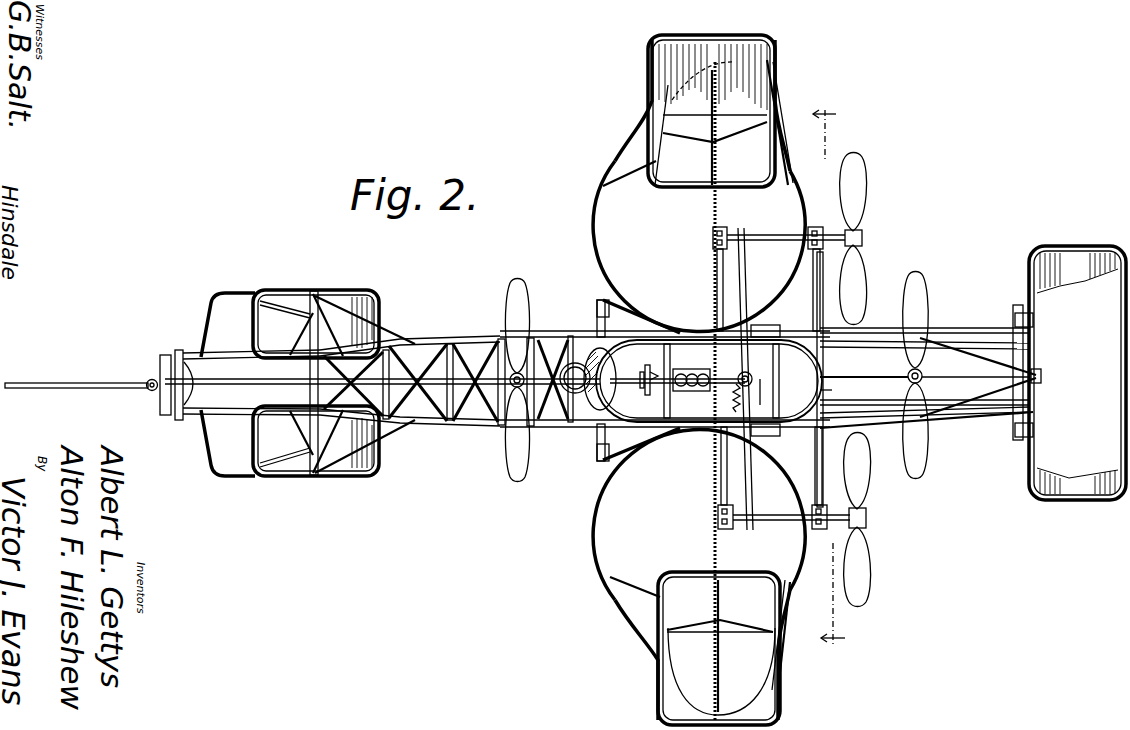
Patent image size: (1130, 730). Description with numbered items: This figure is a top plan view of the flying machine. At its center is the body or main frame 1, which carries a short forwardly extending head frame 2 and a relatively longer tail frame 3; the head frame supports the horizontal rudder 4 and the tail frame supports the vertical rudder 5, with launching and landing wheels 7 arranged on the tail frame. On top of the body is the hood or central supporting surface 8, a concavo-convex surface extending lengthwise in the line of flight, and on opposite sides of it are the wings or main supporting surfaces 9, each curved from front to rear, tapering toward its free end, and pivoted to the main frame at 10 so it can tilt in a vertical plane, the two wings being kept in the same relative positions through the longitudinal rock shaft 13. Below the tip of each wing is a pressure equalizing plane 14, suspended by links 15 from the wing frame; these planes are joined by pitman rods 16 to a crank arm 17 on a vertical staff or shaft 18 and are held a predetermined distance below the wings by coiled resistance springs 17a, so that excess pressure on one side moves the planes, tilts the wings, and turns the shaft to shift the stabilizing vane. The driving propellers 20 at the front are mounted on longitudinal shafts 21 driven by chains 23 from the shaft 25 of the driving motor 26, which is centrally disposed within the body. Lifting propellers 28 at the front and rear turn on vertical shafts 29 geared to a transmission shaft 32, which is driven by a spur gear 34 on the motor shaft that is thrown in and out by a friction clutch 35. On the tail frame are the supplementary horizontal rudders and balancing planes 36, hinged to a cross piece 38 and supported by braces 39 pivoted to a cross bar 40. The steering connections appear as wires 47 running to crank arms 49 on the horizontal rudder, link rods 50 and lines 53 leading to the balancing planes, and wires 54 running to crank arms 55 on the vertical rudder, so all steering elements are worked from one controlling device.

The body or main frame 1 is at (584, 323).
The head frame 2 is at (925, 379).
The tail frame 3 is at (248, 384).
The horizontal rudder 4 is at (1073, 476).
The vertical rudder 5 is at (75, 384).
The launching and landing wheels 7 is at (410, 368).
The hood or central supporting surface 8 is at (823, 391).
The wings or main supporting surfaces 9 is at (622, 301).
The wing pivot 10 is at (768, 325).
The rock shaft 13 is at (374, 477).
The pressure equalizing plane 14 is at (748, 93).
The links or flexible connections 15 is at (633, 173).
The pitman rods 16 is at (719, 200).
The crank arm 17 is at (732, 399).
The coiled resistance springs 17a is at (732, 403).
The vertical staff or shaft 18 is at (749, 373).
The driving propellers 20 is at (882, 568).
The longitudinal shafts 21 is at (835, 226).
The chains 23 is at (746, 283).
The motor shaft 25 is at (652, 388).
The driving motor 26 is at (697, 391).
The lifting propellers 28 is at (527, 308).
The vertical shafts 29 is at (510, 378).
The transmission shaft 32 is at (890, 370).
The spur gear 34 is at (647, 365).
The friction clutch 35 is at (640, 386).
The supplementary horizontal rudders and balancing planes 36 is at (355, 295).
The cross piece 38 is at (310, 341).
The braces 39 is at (305, 325).
The cross bar 40 is at (310, 371).
The wires 47 is at (986, 362).
The crank arms 49 is at (1045, 378).
The link rods 50 is at (392, 331).
The lines 53 is at (408, 432).
The wires 54 is at (177, 421).
The crank arms 55 is at (163, 416).